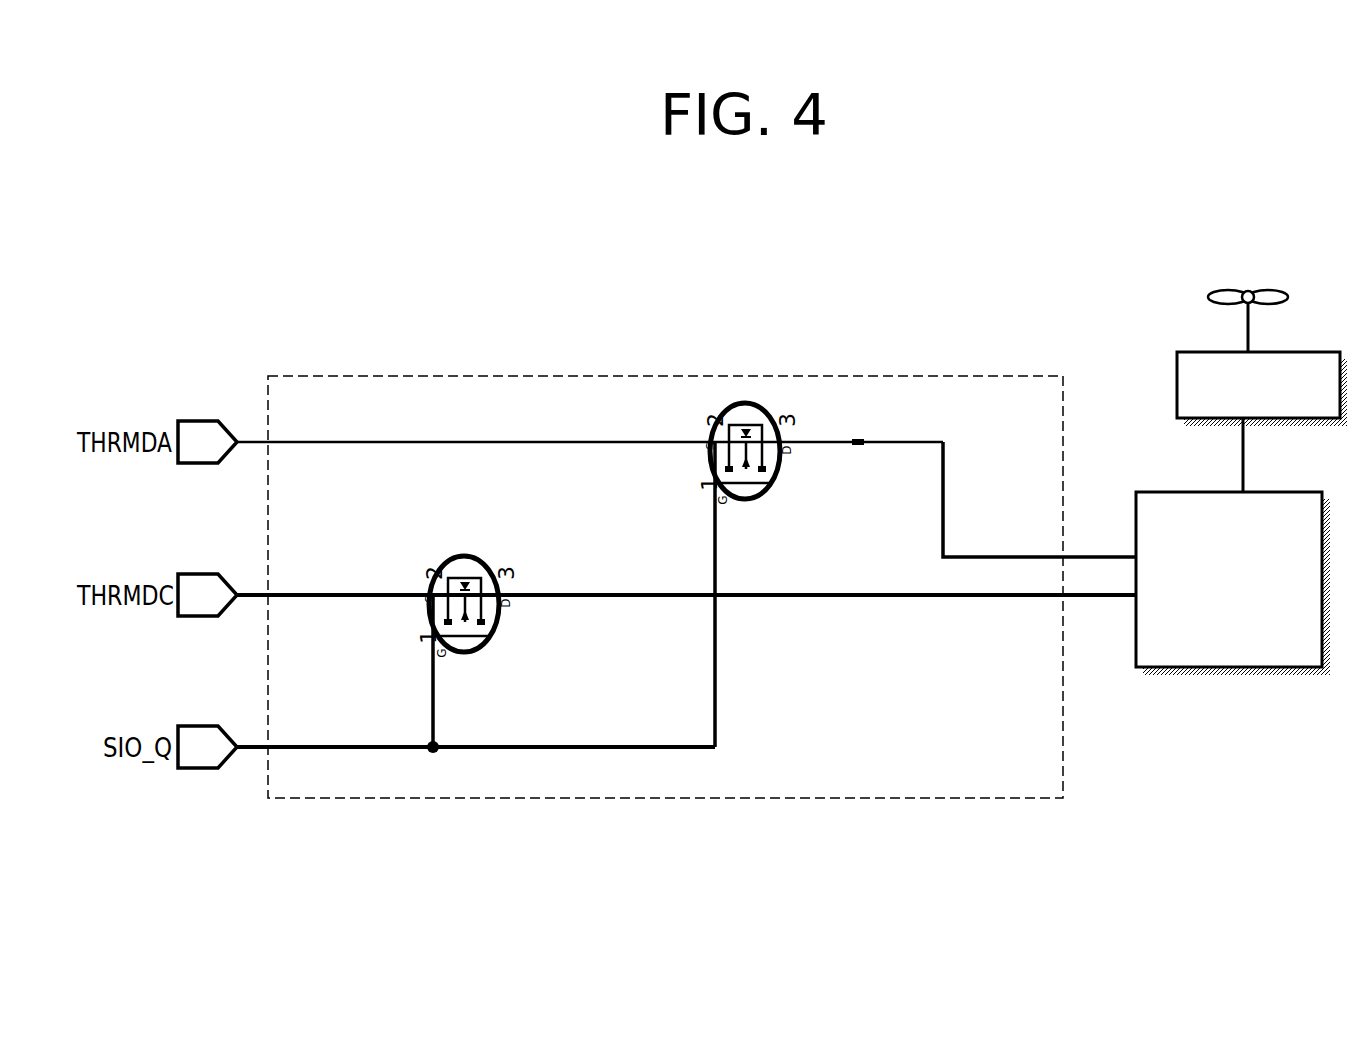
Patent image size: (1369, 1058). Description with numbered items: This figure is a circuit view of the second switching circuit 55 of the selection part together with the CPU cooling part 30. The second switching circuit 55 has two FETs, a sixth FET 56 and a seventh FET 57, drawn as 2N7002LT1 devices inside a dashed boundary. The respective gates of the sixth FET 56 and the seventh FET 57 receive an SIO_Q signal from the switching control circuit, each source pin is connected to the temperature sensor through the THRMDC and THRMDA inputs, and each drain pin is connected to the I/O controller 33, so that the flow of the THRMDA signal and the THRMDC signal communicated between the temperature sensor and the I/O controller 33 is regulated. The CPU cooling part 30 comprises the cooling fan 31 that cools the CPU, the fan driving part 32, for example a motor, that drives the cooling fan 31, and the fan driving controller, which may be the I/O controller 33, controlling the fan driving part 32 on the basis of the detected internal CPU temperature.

The CPU cooling part 30 is at (1145, 210).
The cooling fan 31 is at (1218, 289).
The fan driving part 32 is at (1187, 352).
The I/O controller 33 is at (1145, 492).
The second switching circuit 55 is at (733, 798).
The sixth FET 56 is at (450, 556).
The seventh FET 57 is at (743, 403).